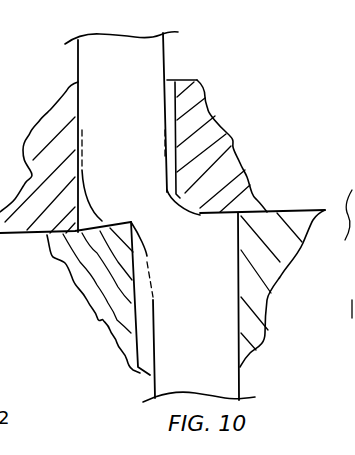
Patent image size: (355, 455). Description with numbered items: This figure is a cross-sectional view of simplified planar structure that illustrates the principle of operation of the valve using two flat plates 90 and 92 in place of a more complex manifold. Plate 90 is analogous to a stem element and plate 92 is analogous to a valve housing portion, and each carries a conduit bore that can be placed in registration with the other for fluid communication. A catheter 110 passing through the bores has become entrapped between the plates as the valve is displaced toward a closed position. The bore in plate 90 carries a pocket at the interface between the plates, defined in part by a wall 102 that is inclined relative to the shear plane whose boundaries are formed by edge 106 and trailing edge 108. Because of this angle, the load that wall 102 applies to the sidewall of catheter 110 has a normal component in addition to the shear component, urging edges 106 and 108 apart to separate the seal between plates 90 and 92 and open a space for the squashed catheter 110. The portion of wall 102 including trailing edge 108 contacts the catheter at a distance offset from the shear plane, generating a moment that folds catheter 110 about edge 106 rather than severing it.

The flat plate 90 is at (50, 123).
The flat plate 92 is at (283, 244).
The wall 102 is at (192, 198).
The edge 106 is at (124, 230).
The trailing edge 108 is at (205, 215).
The catheter 110 is at (150, 61).